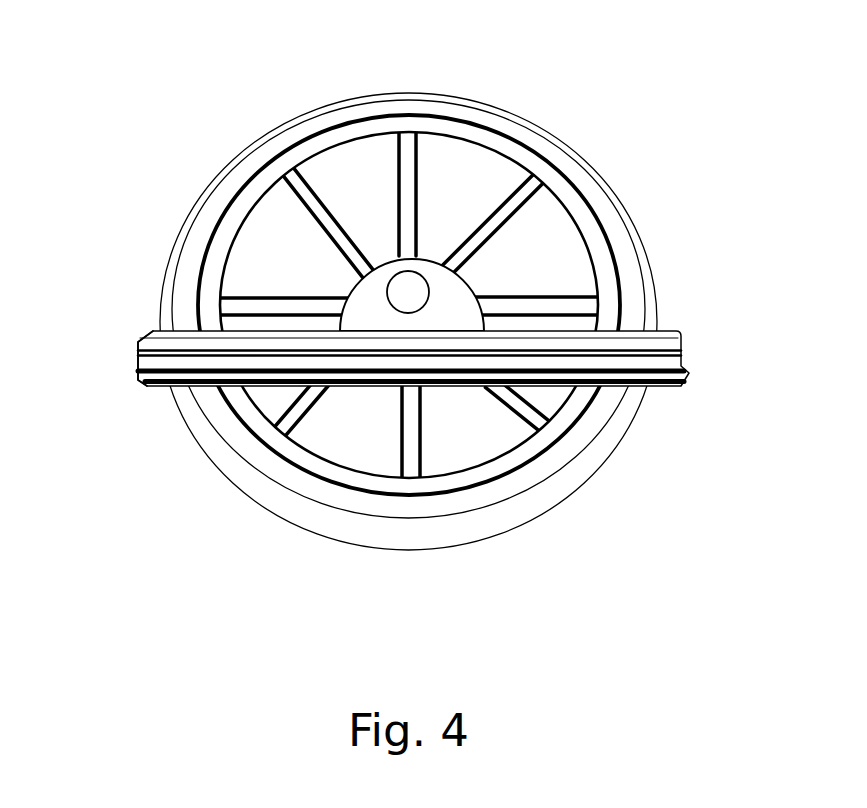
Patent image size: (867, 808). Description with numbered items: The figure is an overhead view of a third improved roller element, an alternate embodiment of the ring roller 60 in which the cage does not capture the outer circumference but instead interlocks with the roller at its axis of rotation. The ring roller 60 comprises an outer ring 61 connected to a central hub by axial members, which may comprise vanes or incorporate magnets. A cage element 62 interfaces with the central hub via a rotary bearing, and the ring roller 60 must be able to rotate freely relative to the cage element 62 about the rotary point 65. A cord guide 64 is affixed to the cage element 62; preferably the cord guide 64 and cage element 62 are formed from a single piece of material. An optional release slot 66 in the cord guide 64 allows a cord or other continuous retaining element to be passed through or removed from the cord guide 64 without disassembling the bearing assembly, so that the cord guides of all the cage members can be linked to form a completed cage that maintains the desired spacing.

The ring roller 60 is at (140, 530).
The outer ring 61 is at (632, 278).
The cage element 62 is at (391, 268).
The cord guide 64 is at (155, 337).
The rotary point 65 is at (475, 178).
The release slot 66 is at (135, 363).